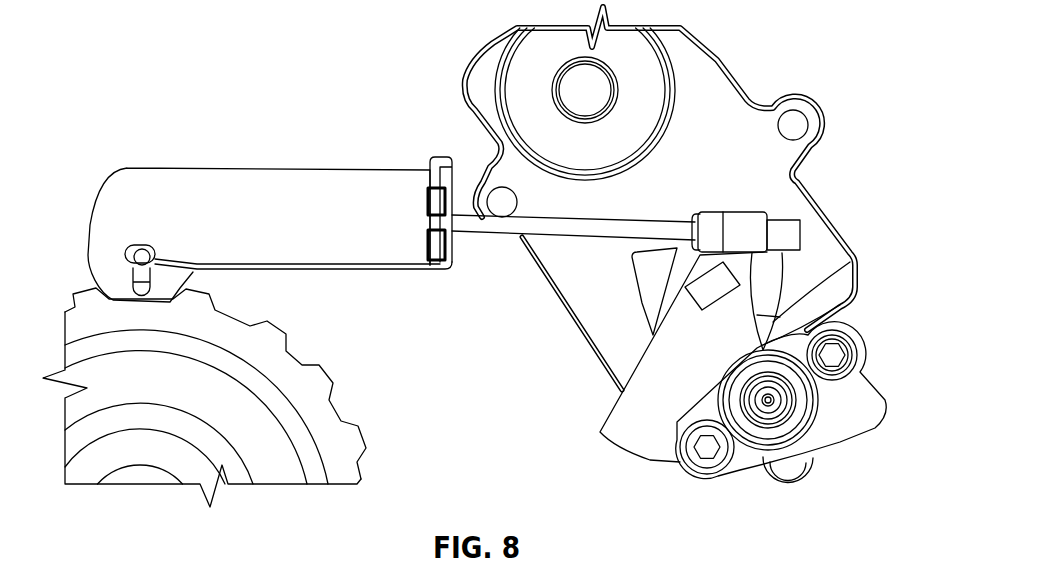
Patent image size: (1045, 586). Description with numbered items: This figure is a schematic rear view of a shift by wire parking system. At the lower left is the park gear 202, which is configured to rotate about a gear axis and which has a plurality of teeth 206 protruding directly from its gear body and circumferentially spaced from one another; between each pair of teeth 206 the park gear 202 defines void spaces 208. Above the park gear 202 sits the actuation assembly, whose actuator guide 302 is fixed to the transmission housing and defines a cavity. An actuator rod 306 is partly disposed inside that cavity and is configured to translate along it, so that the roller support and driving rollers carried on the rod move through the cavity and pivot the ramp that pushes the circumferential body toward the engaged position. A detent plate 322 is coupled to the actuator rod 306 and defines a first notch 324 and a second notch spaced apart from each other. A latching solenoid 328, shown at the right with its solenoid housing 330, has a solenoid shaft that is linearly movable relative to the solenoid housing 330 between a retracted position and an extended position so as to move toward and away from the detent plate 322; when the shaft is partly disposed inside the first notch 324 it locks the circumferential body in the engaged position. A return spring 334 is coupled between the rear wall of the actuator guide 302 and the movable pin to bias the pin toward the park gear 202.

The park gear 202 is at (290, 417).
The teeth 206 is at (258, 325).
The void spaces 208 is at (305, 360).
The actuator guide 302 is at (219, 205).
The actuator rod 306 is at (633, 223).
The detent plate 322 is at (455, 262).
The first notch 324 is at (852, 254).
The latching solenoid 328 is at (858, 348).
The solenoid housing 330 is at (805, 410).
The return spring 334 is at (373, 278).